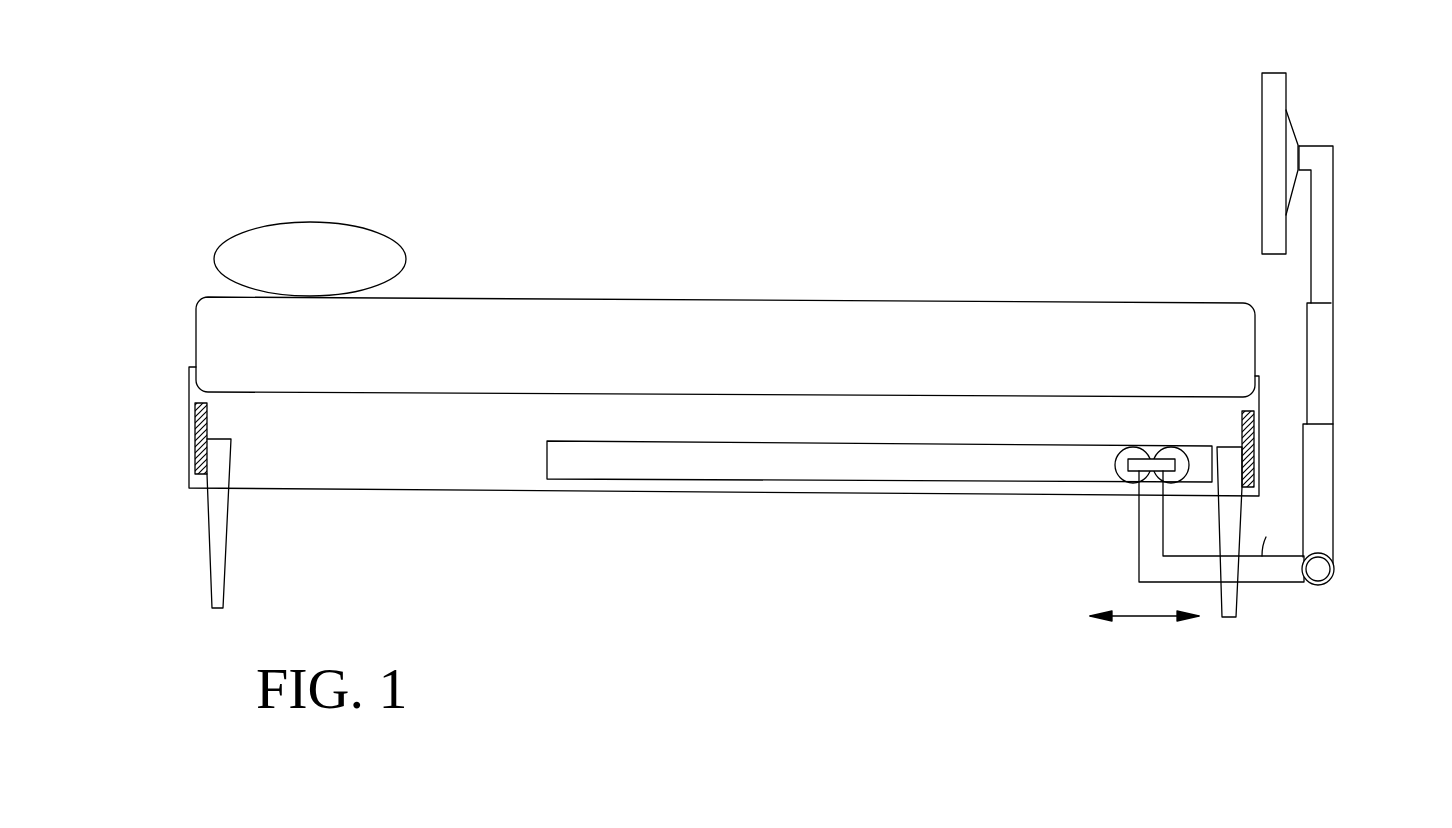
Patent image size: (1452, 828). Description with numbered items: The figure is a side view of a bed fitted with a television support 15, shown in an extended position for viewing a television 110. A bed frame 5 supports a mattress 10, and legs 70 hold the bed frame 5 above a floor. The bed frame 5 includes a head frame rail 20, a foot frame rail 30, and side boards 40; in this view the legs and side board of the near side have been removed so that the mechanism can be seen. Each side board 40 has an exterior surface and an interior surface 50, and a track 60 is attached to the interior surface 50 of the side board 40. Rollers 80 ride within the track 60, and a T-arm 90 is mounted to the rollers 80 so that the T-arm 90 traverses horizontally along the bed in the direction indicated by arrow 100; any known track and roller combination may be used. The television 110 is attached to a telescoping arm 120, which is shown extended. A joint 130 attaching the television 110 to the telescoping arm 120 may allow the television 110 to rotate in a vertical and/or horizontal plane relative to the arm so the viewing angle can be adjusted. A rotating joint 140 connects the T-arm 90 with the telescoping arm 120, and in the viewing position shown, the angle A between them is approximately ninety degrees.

The bed frame 5 is at (427, 512).
The mattress 10 is at (572, 297).
The television support 15 is at (1280, 617).
The head frame rail 20 is at (195, 437).
The foot frame rail 30 is at (1243, 425).
The side board 40 is at (497, 490).
The interior surface 50 is at (403, 441).
The track 60 is at (712, 467).
The legs 70 is at (223, 560).
The rollers 80 is at (1115, 467).
The T-arm 90 is at (1151, 568).
The arrow 100 is at (1165, 617).
The television 110 is at (1278, 72).
The telescoping arm 120 is at (1333, 351).
The joint 130 is at (1297, 133).
The rotating joint 140 is at (1318, 569).
The angle A is at (1305, 513).